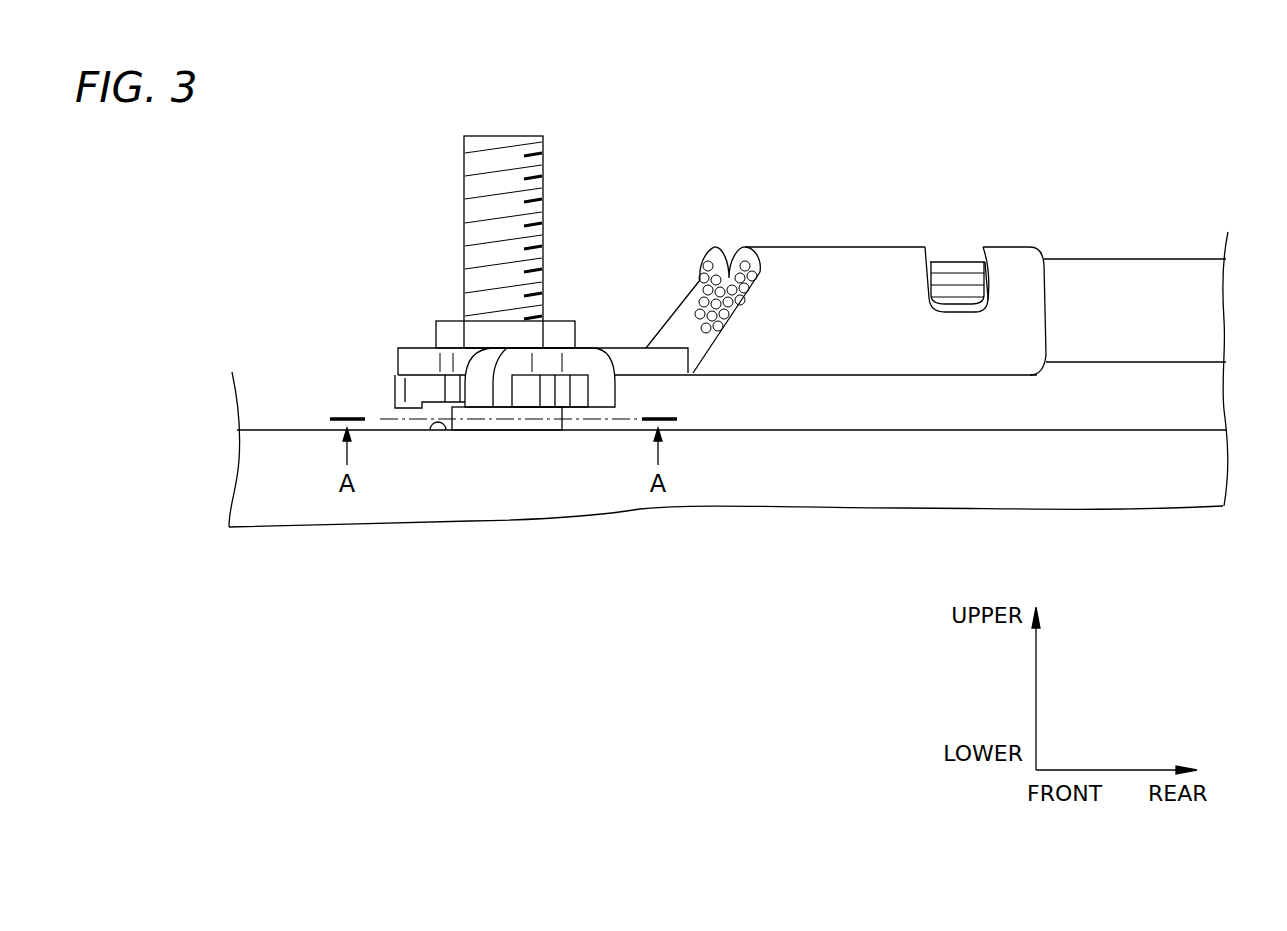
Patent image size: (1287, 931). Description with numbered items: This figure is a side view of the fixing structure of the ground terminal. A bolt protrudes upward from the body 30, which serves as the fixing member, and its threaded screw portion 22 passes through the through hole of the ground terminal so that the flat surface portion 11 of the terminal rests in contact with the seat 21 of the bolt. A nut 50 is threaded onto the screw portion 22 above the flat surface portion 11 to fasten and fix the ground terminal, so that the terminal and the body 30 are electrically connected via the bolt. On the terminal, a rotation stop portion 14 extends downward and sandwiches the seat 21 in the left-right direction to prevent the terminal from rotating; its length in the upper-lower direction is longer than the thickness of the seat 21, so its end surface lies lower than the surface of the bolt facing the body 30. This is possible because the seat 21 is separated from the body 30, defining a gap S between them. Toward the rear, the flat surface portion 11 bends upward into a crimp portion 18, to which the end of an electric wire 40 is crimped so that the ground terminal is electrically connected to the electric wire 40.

The flat surface portion 11 is at (668, 363).
The rotation stop portion 14 is at (475, 396).
The crimp portion 18 is at (853, 260).
The seat 21 is at (527, 393).
The screw portion 22 is at (543, 143).
The body 30 is at (288, 422).
The electric wire 40 is at (1104, 244).
The nut 50 is at (581, 317).
The gap S is at (432, 424).